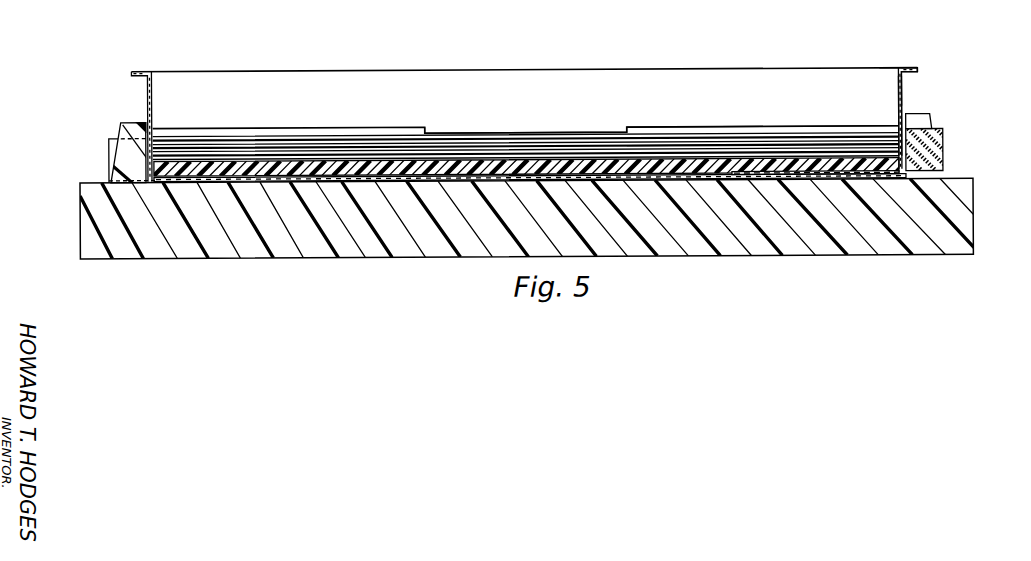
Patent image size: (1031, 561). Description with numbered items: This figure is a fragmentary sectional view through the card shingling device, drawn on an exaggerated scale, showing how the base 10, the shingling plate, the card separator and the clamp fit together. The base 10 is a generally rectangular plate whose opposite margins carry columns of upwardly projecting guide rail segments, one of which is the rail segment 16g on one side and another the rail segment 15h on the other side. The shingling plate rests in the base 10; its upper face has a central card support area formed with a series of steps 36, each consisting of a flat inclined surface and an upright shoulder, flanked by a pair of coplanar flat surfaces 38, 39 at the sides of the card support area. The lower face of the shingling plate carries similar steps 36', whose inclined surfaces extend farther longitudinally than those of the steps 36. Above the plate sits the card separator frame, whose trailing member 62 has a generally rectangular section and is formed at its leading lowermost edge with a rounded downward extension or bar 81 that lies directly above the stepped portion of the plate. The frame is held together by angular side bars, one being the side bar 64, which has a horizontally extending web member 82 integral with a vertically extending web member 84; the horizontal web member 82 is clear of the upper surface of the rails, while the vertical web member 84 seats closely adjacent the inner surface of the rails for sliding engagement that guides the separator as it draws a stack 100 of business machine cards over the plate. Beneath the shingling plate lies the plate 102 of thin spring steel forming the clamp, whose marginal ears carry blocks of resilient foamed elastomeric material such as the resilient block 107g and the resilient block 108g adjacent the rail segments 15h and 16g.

The base 10 is at (72, 210).
The rail segment 16g is at (127, 132).
The resilient block 108g is at (112, 146).
The trailing member 62 is at (658, 83).
The side bar 64 is at (912, 58).
The horizontally extending web member 82 is at (920, 72).
The vertically extending web member 84 is at (903, 102).
The steps 36 is at (526, 130).
The rounded downward extension or bar 81 is at (611, 132).
The stack of business machine cards 100 is at (700, 128).
The flat surface 38 is at (770, 160).
The flat surface 39 is at (244, 162).
The plate 102 is at (792, 182).
The steps 36' is at (530, 227).
The rail segment 15h is at (923, 125).
The resilient block 107g is at (943, 153).